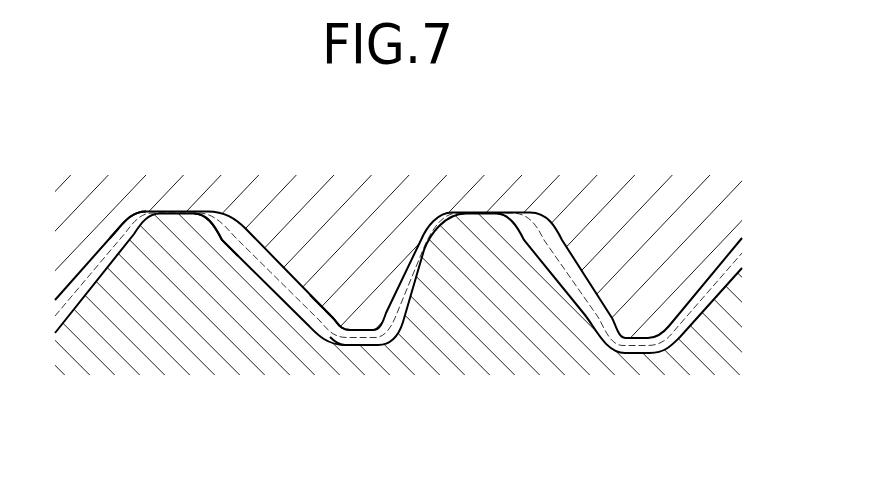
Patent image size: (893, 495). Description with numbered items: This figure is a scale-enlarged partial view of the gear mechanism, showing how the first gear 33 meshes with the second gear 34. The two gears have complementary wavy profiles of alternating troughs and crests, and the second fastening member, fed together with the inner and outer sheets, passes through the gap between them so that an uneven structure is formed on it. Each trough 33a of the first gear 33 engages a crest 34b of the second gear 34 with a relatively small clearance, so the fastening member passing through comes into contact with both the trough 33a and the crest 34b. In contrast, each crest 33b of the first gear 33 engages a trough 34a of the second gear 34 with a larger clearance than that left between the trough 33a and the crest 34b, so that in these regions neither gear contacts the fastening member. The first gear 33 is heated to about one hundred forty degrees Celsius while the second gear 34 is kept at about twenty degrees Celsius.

The first gear 33 is at (637, 203).
The trough of the first gear 33a is at (134, 222).
The crest of the first gear 33b is at (335, 323).
The second gear 34 is at (586, 353).
The trough of the second gear 34a is at (355, 345).
The crest of the second gear 34b is at (228, 219).